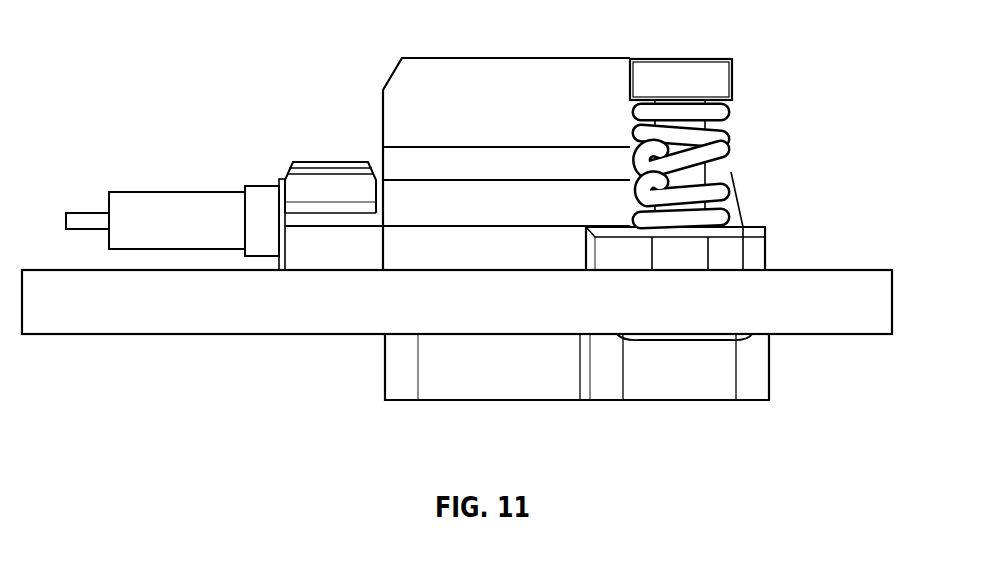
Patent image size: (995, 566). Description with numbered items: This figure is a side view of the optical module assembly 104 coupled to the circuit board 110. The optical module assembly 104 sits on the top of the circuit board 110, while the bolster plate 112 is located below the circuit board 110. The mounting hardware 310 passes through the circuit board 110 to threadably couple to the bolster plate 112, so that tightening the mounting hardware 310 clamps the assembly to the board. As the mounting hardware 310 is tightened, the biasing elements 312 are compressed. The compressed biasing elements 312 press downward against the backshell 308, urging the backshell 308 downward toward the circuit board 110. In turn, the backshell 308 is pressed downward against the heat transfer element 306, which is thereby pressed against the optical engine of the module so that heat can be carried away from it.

The optical module assembly 104 is at (778, 78).
The circuit board 110 is at (868, 303).
The bolster plate 112 is at (755, 374).
The heat transfer element 306 is at (422, 90).
The backshell 308 is at (752, 226).
The mounting hardware 310 is at (687, 67).
The biasing elements 312 is at (715, 137).